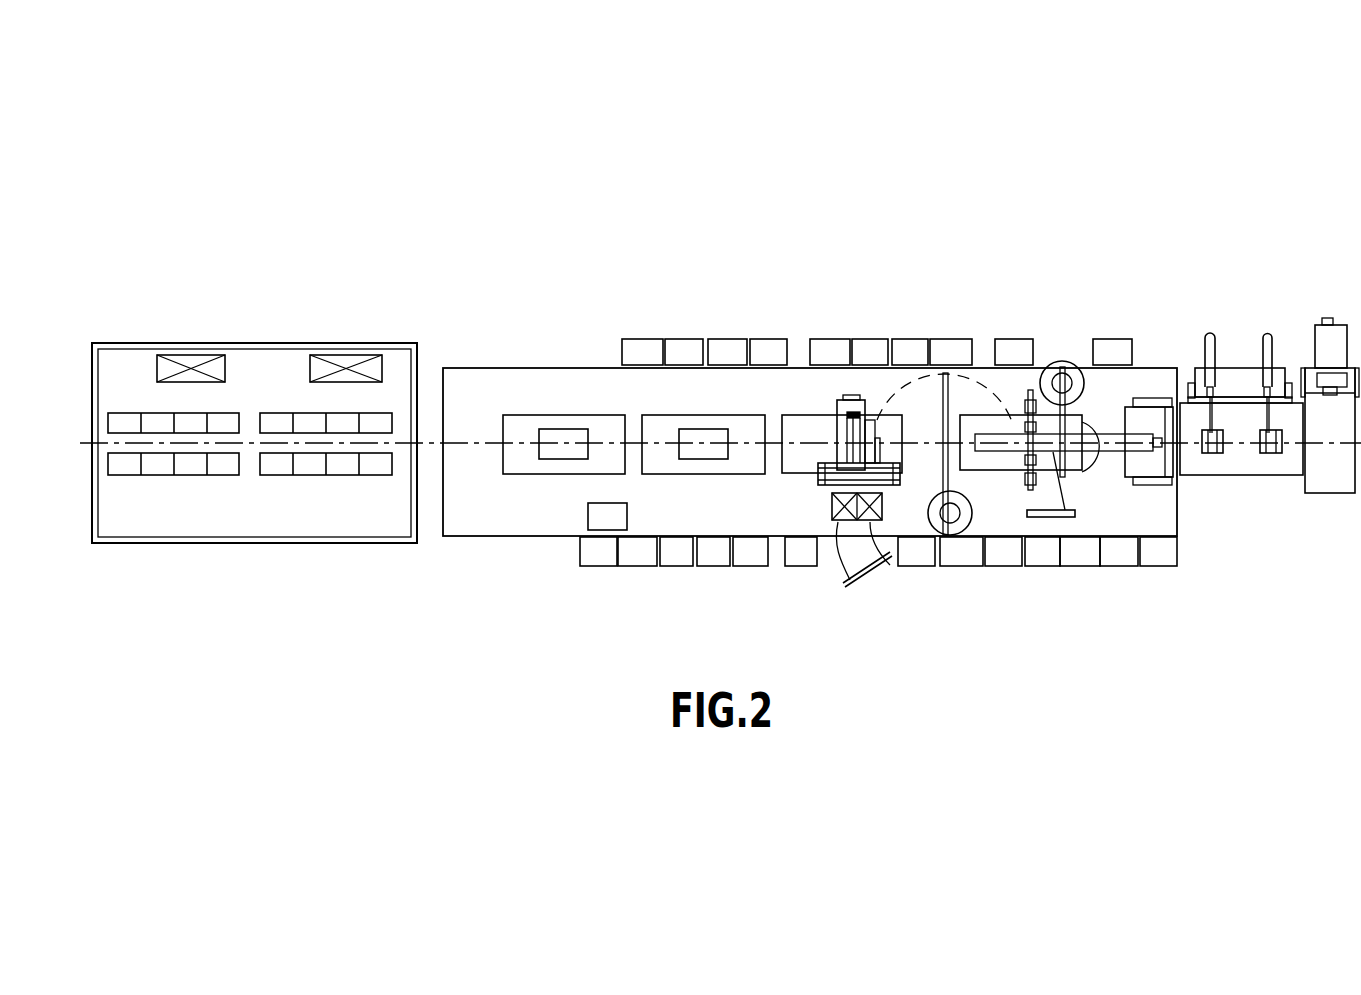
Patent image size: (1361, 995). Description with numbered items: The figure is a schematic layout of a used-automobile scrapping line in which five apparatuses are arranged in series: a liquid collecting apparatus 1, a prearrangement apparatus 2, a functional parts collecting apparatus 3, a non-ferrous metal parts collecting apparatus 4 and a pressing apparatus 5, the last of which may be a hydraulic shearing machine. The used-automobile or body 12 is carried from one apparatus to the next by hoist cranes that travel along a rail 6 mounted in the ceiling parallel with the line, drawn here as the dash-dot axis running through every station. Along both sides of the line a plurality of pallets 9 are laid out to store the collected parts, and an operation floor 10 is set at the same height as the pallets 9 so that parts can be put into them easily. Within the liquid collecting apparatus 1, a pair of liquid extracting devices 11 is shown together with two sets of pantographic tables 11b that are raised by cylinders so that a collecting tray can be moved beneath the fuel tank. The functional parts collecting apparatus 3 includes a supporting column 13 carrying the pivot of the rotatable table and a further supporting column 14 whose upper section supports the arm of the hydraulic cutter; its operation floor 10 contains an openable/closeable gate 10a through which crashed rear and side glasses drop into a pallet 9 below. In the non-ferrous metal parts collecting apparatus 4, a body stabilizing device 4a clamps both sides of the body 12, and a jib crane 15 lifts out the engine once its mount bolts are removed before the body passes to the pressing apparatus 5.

The liquid collecting apparatus 1 is at (268, 338).
The prearrangement apparatus 2 is at (637, 401).
The functional parts collecting apparatus 3 is at (855, 393).
The non-ferrous metal parts collecting apparatus 4 is at (975, 373).
The body stabilizing device 4a is at (1047, 494).
The pressing apparatus 5 is at (1235, 362).
The rail 6 is at (470, 447).
The pallets 9 is at (722, 350).
The operation floor 10 is at (548, 537).
The openable/closeable gate 10a is at (868, 520).
The liquid extracting devices 11 is at (193, 356).
The pantographic tables 11b is at (155, 472).
The used-automobile or body 12 is at (530, 415).
The supporting column 13 is at (557, 460).
The supporting column 14 is at (848, 591).
The jib crane 15 is at (1082, 422).